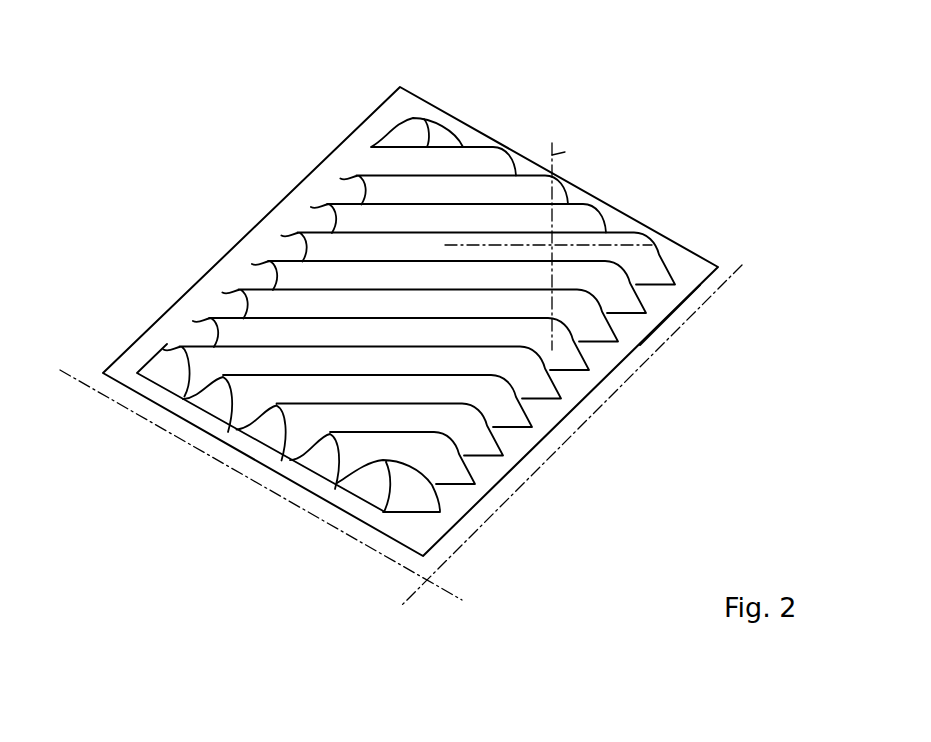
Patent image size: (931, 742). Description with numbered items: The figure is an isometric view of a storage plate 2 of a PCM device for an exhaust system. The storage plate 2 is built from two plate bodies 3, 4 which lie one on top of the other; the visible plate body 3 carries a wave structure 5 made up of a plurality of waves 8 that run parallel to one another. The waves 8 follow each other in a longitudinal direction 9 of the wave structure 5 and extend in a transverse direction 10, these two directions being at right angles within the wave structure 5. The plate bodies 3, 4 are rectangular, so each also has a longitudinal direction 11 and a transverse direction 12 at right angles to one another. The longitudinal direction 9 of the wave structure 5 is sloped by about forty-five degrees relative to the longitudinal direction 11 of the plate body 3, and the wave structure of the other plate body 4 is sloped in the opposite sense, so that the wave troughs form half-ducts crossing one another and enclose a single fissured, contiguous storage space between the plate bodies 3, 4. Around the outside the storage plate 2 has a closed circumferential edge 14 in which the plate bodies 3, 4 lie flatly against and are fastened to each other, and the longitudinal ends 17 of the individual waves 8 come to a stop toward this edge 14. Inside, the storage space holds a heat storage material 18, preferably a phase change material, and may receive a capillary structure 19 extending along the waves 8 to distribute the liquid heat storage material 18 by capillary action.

The storage plate 2 is at (717, 147).
The plate body 3 is at (702, 255).
The plate body 4 is at (638, 352).
The wave structure 5 is at (400, 300).
The waves 8 is at (320, 247).
The longitudinal direction of the wave structure 9 is at (565, 150).
The transverse direction of the wave structure 10 is at (618, 243).
The longitudinal direction of the plate body 11 is at (600, 427).
The transverse direction of the plate body 12 is at (260, 487).
The circumferential edge 14 is at (243, 255).
The longitudinal ends of the waves 17 is at (230, 310).
The heat storage material 18 is at (443, 116).
The capillary structure 19 is at (426, 178).